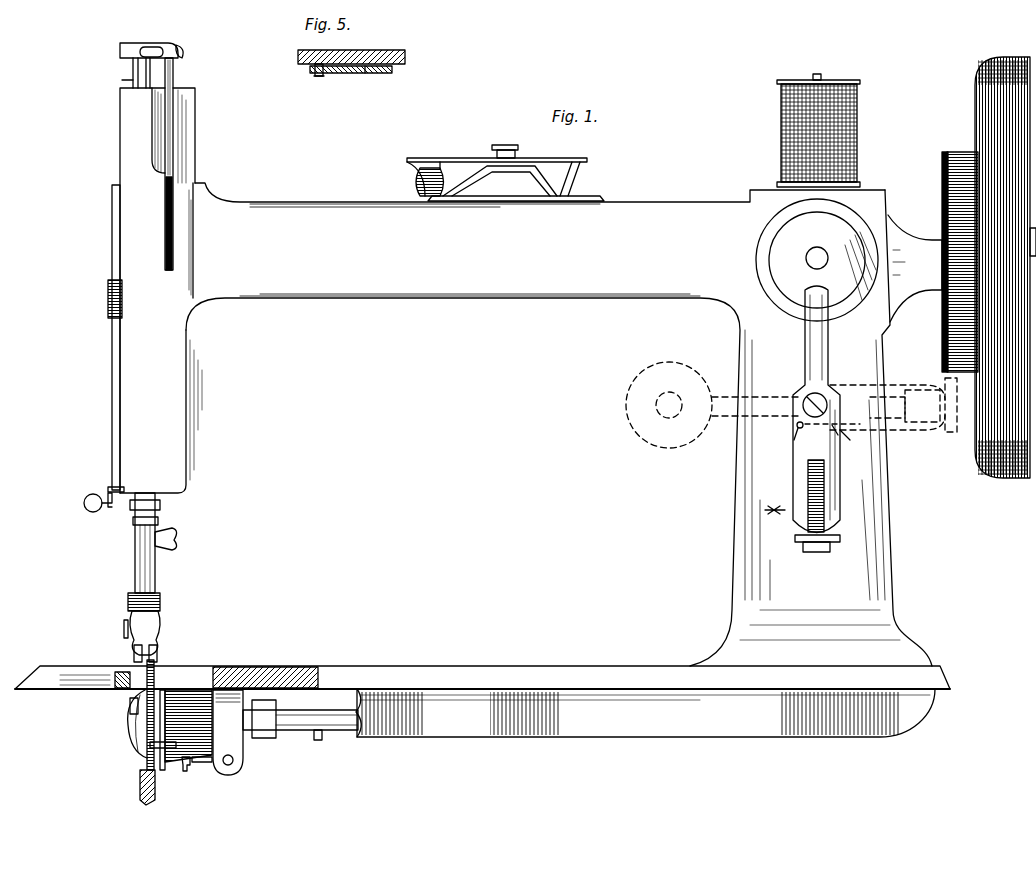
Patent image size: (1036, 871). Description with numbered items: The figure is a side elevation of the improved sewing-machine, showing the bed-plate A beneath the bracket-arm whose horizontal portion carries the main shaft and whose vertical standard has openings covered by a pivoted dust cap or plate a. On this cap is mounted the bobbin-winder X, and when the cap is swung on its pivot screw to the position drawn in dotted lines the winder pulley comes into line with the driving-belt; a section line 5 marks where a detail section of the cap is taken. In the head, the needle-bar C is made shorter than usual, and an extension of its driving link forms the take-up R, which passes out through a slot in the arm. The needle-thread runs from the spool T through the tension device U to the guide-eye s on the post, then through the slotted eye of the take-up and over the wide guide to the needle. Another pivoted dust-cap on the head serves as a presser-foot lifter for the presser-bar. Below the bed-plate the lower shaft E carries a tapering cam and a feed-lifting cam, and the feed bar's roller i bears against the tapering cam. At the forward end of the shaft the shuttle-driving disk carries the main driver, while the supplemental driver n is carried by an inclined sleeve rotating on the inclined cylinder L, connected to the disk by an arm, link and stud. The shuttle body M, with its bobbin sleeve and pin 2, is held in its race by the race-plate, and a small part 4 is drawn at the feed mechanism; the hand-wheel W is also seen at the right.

In FIG. 1, the bed-plate A is at (521, 666).
In FIG. 1, the take-up R is at (173, 137).
In FIG. 1, the guide-eye s is at (184, 52).
In FIG. 1, the dust-cap D is at (110, 260).
In FIG. 1, the needle-bar C is at (160, 540).
In FIG. 1, the pin 2 is at (144, 602).
In FIG. 1, the shuttle body M is at (138, 732).
In FIG. 1, the bracket 4 is at (130, 708).
In FIG. 1, the supplemental driver n is at (145, 755).
In FIG. 1, the inclined cylinder L is at (180, 693).
In FIG. 1, the roller i is at (318, 742).
In FIG. 1, the lower shaft E is at (360, 740).
In FIG. 1, the tension device U is at (505, 160).
In FIG. 1, the spool T is at (780, 142).
In FIG. 5, the dust cap or plate a is at (352, 66).
In FIG. 1, the dust cap or plate a is at (805, 466).
In FIG. 1, the section line 5 is at (818, 421).
In FIG. 1, the bobbin-winder X is at (775, 515).
In FIG. 1, the hand wheel W is at (1005, 267).